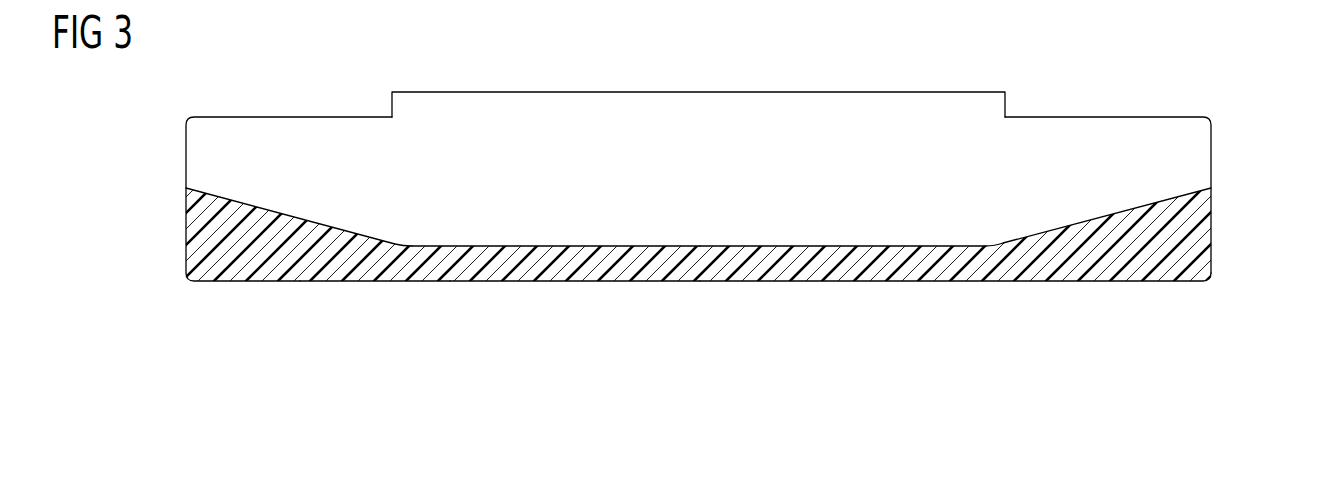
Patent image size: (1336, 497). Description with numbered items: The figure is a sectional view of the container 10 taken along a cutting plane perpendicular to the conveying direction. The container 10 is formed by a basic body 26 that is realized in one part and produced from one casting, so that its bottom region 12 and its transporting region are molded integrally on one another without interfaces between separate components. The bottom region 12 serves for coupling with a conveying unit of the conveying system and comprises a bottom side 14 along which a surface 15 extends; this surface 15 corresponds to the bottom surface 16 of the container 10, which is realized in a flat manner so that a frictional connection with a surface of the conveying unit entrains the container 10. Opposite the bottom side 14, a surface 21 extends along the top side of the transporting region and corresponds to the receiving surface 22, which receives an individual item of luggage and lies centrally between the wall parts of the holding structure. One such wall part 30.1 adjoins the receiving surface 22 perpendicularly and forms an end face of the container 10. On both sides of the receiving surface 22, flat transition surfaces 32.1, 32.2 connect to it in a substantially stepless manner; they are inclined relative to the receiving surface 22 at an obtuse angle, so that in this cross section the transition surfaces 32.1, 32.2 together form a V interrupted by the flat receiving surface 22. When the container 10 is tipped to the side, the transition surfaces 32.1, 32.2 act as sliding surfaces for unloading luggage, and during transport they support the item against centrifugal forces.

The container 10 is at (1243, 83).
The bottom region 12 is at (1191, 284).
The bottom side 14 is at (281, 284).
The surface 15 is at (515, 284).
The bottom surface 16 is at (379, 284).
The surface 21 is at (477, 246).
The receiving surface 22 is at (765, 246).
The basic body 26 is at (1212, 225).
The wall part 30.1 is at (965, 92).
The transition surface 32.1 is at (1139, 207).
The transition surface 32.2 is at (267, 208).